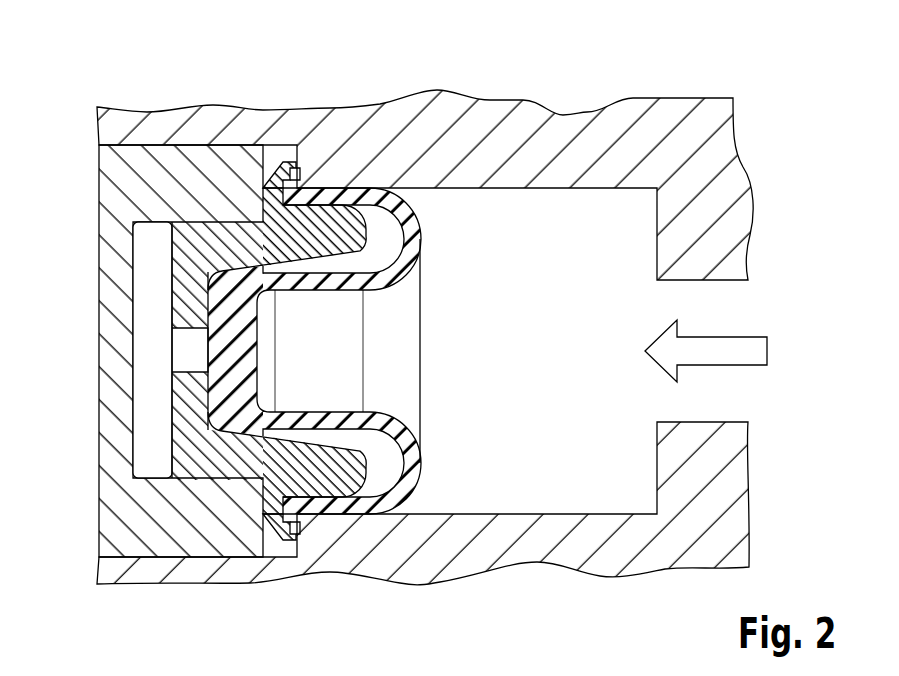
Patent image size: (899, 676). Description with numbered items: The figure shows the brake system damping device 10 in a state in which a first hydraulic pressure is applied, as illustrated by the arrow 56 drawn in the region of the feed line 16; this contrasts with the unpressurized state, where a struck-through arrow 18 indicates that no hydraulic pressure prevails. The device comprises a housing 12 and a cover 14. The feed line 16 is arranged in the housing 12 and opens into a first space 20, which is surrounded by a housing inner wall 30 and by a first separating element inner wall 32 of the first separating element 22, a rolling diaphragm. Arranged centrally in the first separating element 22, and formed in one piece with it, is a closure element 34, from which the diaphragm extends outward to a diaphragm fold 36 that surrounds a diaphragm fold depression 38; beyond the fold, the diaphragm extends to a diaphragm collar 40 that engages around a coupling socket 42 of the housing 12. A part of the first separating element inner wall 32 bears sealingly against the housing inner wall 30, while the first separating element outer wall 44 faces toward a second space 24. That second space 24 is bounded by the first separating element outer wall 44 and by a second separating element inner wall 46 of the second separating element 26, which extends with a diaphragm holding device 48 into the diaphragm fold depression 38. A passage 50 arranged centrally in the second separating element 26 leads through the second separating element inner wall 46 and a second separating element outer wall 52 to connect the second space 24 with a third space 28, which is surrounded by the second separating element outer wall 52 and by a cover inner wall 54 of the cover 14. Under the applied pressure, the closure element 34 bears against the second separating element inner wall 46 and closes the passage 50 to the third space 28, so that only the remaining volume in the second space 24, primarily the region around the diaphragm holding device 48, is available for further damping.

The brake system damping device 10 is at (774, 90).
The housing 12 is at (707, 152).
The cover 14 is at (110, 357).
The feed line 16 is at (745, 300).
The struck-through arrow 18 is at (715, 388).
The first space 20 is at (630, 487).
The first separating element 22 is at (333, 196).
The second space 24 is at (215, 307).
The second separating element 26 is at (185, 243).
The third space 28 is at (152, 287).
The housing inner wall 30 is at (610, 190).
The first separating element inner wall 32 is at (258, 343).
The closure element 34 is at (258, 376).
The diaphragm fold 36 is at (420, 238).
The diaphragm fold depression 38 is at (405, 263).
The diaphragm collar 40 is at (283, 166).
The coupling socket 42 is at (298, 172).
The first separating element outer wall 44 is at (196, 394).
The second separating element inner wall 46 is at (236, 386).
The diaphragm holding device 48 is at (365, 200).
The passage 50 is at (183, 355).
The second separating element outer wall 52 is at (163, 440).
The cover inner wall 54 is at (140, 470).
The arrow 56 is at (752, 352).